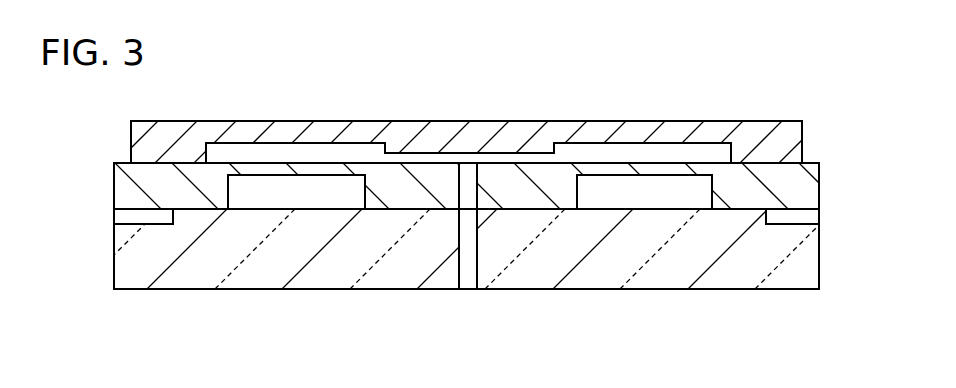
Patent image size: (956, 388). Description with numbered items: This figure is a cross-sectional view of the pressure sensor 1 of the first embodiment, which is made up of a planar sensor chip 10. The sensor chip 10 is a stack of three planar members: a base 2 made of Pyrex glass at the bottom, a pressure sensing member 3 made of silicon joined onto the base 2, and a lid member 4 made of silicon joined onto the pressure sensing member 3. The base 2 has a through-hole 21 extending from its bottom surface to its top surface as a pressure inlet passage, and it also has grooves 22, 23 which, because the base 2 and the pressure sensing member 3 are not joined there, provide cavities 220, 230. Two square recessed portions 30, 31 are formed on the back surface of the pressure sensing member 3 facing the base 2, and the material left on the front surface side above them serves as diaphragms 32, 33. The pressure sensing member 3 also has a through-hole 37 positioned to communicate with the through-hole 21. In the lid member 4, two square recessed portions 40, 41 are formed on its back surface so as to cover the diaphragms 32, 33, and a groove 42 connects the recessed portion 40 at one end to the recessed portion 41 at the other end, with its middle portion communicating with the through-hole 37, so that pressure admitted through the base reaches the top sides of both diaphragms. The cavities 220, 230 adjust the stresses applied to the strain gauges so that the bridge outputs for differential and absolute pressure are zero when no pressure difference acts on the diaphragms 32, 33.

The pressure sensor 1 is at (424, 48).
The sensor chip 10 is at (97, 290).
The base 2 is at (807, 247).
The pressure sensing member 3 is at (807, 186).
The lid member 4 is at (793, 144).
The through-hole 21 is at (468, 282).
The groove 22 is at (793, 225).
The groove 23 is at (140, 226).
The cavity 220 is at (765, 215).
The cavity 230 is at (165, 215).
The recessed portion 30 is at (625, 192).
The recessed portion 31 is at (273, 192).
The diaphragm 32 is at (673, 168).
The diaphragm 33 is at (320, 165).
The through-hole 37 is at (468, 172).
The recessed portion 40 is at (630, 153).
The recessed portion 41 is at (275, 153).
The groove 42 is at (507, 157).